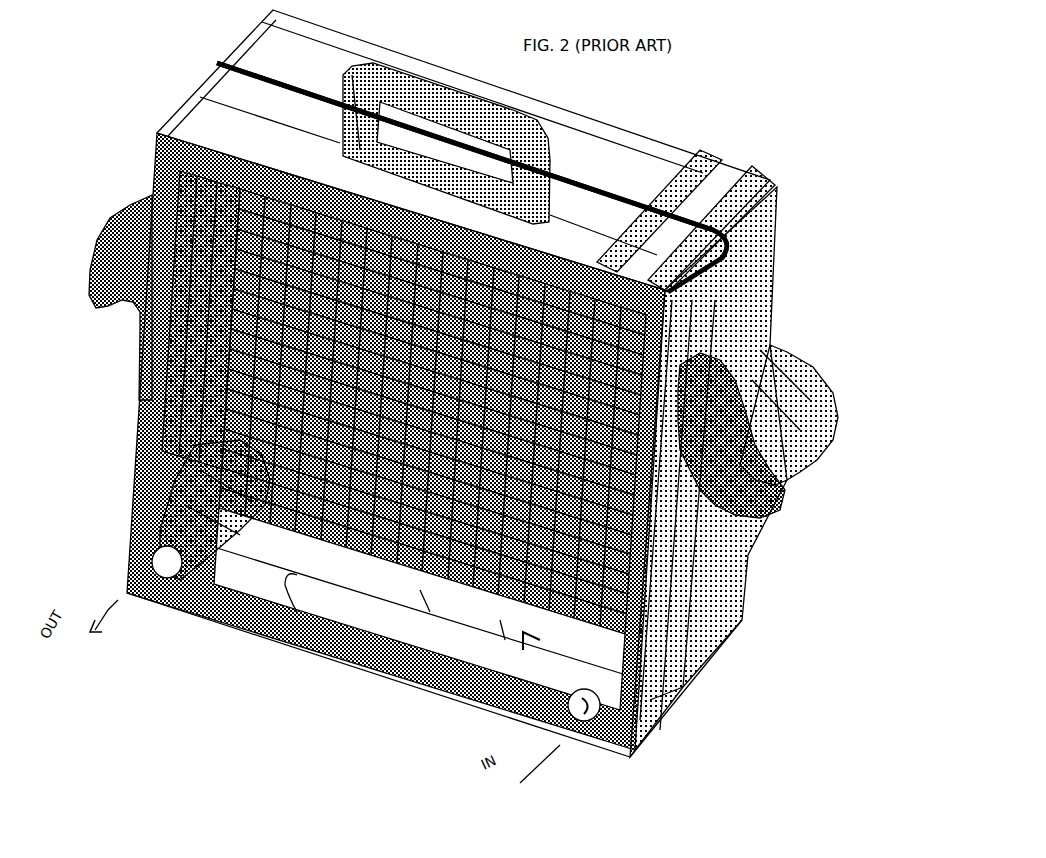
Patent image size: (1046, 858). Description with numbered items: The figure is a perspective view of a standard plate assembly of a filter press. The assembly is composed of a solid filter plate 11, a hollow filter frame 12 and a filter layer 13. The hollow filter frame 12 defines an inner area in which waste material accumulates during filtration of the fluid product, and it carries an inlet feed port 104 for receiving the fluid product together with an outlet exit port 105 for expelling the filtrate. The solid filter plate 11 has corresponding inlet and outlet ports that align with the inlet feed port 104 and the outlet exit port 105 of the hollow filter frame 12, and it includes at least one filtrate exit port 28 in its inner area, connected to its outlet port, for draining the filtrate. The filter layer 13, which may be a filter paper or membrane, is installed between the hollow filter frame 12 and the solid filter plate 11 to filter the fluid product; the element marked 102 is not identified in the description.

The solid filter plate 11 is at (753, 305).
The hollow filter frame 12 is at (647, 710).
The filter layer 13 is at (650, 513).
The filtrate exit port 28 is at (250, 406).
The bottom edge 102 is at (250, 642).
The inlet feed port 104 is at (600, 752).
The outlet exit port 105 is at (125, 561).